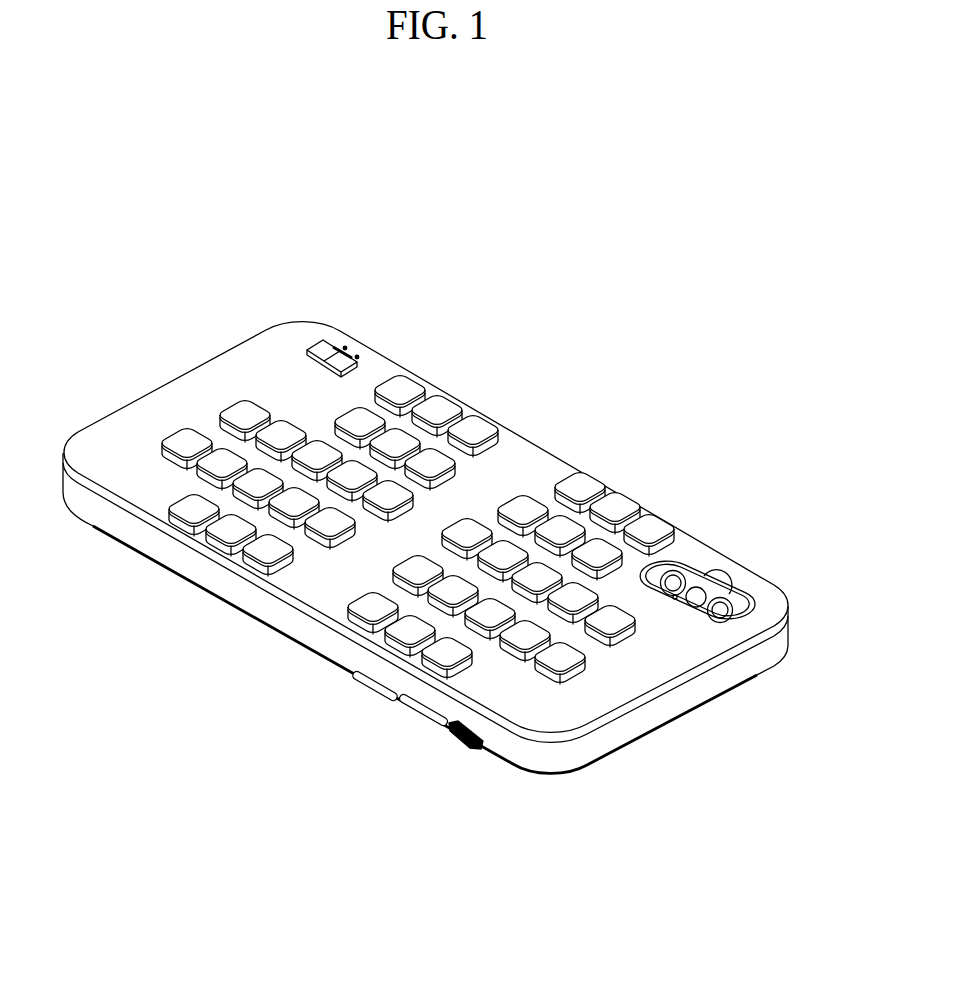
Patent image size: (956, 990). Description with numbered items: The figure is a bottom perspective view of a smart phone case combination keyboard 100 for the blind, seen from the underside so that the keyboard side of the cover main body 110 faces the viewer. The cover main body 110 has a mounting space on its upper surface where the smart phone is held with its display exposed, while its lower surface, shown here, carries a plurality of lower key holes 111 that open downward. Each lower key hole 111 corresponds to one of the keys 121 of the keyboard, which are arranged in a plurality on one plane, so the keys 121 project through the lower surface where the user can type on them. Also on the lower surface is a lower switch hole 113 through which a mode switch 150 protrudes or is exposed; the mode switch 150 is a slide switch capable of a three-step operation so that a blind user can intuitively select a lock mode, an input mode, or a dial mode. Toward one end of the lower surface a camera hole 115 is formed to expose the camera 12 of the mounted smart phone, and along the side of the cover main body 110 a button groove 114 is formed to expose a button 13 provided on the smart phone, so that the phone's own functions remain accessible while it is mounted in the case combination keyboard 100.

The smart phone case combination keyboard 100 is at (514, 199).
The cover main body 110 is at (600, 433).
The lower key hole 111 is at (608, 655).
The key 121 is at (447, 402).
The mode switch 150 is at (321, 340).
The lower switch hole 113 is at (347, 349).
The camera 12 is at (675, 583).
The camera hole 115 is at (742, 587).
The button groove 114 is at (368, 683).
The button 13 is at (423, 712).